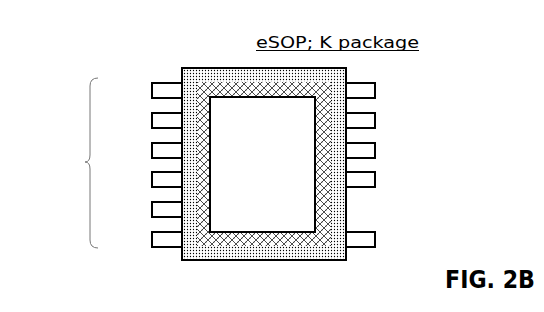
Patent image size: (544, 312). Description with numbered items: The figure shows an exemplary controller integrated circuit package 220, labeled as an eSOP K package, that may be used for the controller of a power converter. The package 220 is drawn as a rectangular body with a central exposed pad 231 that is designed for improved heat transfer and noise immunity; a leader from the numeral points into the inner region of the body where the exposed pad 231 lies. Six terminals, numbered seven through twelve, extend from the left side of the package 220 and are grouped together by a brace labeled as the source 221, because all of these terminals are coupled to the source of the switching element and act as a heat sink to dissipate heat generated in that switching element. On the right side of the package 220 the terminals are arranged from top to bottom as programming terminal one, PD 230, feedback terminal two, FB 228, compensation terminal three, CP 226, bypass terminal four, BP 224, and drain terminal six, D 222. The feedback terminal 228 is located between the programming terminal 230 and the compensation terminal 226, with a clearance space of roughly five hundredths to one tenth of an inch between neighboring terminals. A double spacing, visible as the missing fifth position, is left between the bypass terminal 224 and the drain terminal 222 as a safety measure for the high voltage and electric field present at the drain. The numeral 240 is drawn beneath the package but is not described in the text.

The package 220 is at (245, 52).
The source 221 is at (58, 132).
The drain terminal 6, D 222 is at (427, 230).
The bypass terminal 4, BP 224 is at (436, 182).
The compensation terminal 3, CP 226 is at (433, 152).
The feedback terminal 2, FB 228 is at (433, 122).
The programming terminal 1, PD 230 is at (434, 95).
The exposed pad 231 is at (224, 108).
The package bottom / die pad 240 is at (222, 310).